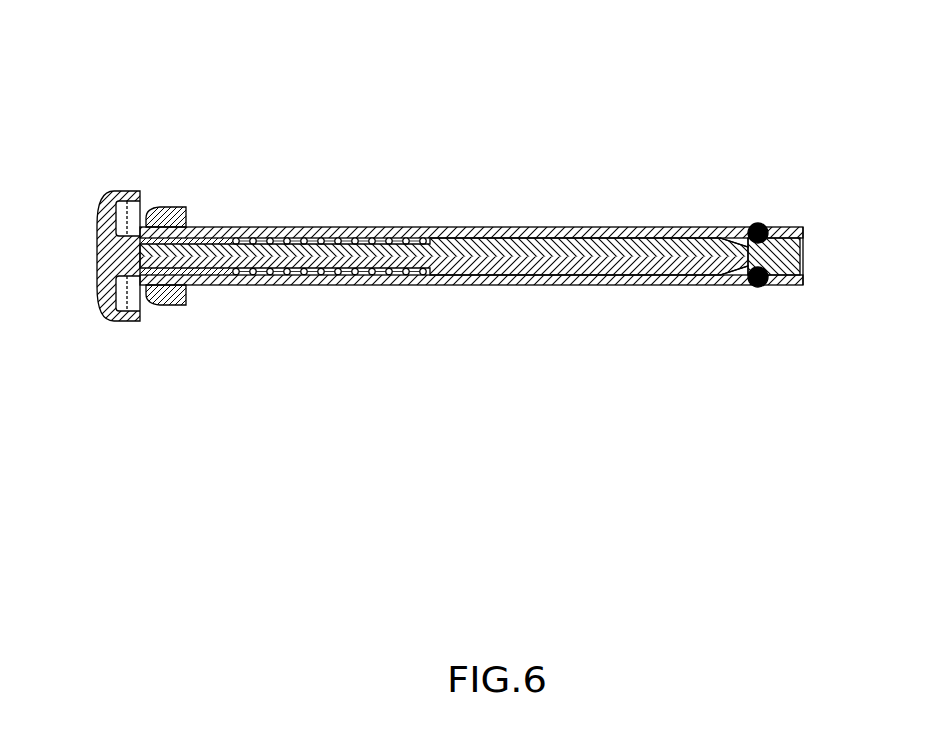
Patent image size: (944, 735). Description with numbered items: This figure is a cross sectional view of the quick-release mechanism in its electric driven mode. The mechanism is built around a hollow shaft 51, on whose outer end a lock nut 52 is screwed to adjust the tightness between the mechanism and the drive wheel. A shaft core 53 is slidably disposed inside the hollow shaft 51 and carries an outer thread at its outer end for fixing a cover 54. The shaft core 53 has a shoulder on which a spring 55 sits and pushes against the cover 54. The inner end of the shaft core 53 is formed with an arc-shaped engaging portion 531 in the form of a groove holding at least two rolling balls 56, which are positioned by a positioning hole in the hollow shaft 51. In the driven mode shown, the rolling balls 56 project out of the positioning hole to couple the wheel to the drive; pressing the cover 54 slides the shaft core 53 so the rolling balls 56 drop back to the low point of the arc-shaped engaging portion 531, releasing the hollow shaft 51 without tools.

The hollow shaft 51 is at (542, 230).
The lock nut 52 is at (181, 207).
The shaft core 53 is at (358, 256).
The arc-shaped engaging portion 531 is at (738, 243).
The cover 54 is at (108, 196).
The spring 55 is at (300, 240).
The rolling balls 56 is at (758, 232).